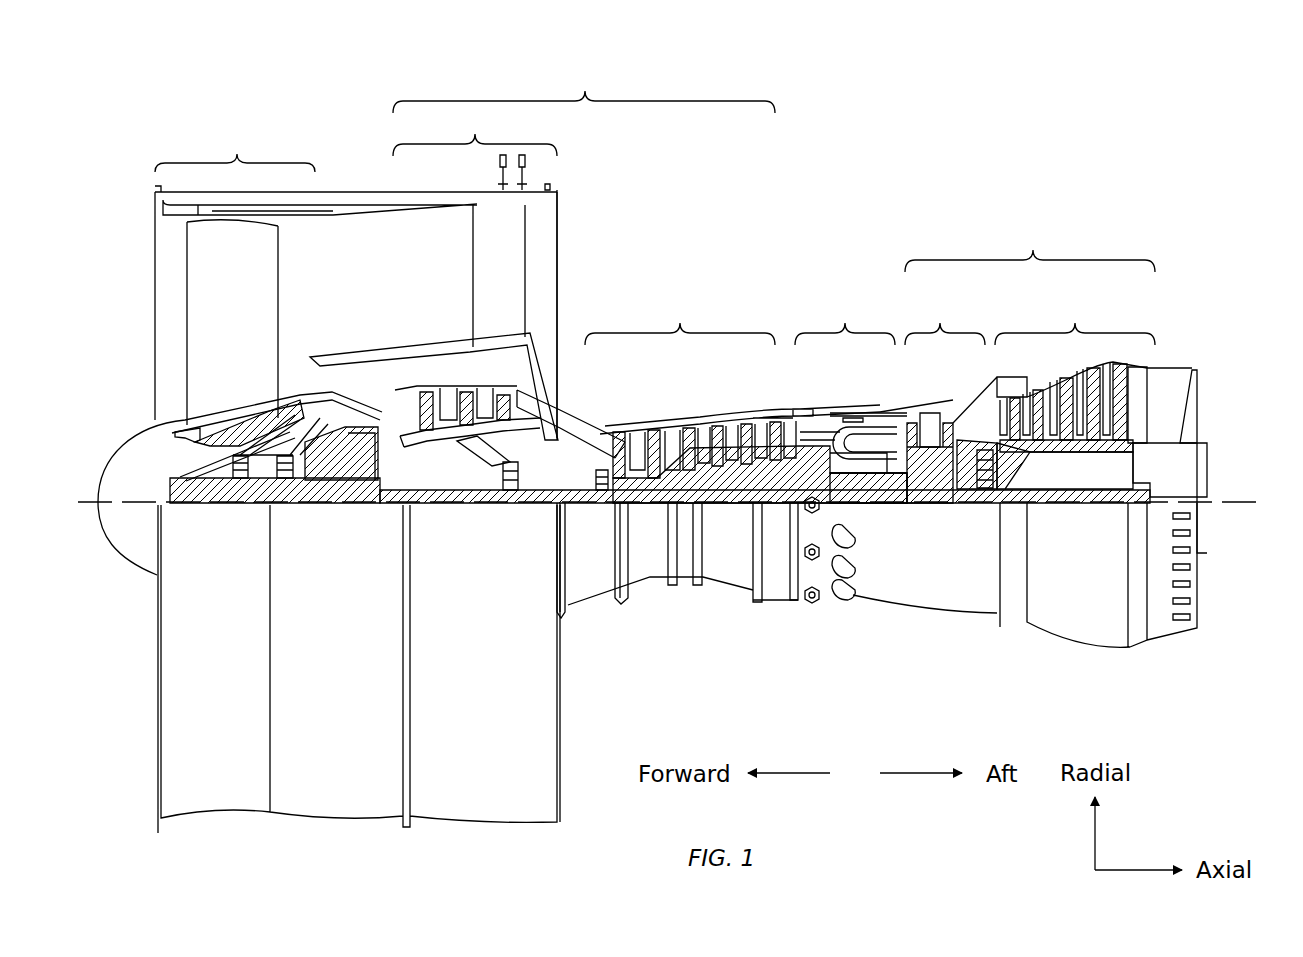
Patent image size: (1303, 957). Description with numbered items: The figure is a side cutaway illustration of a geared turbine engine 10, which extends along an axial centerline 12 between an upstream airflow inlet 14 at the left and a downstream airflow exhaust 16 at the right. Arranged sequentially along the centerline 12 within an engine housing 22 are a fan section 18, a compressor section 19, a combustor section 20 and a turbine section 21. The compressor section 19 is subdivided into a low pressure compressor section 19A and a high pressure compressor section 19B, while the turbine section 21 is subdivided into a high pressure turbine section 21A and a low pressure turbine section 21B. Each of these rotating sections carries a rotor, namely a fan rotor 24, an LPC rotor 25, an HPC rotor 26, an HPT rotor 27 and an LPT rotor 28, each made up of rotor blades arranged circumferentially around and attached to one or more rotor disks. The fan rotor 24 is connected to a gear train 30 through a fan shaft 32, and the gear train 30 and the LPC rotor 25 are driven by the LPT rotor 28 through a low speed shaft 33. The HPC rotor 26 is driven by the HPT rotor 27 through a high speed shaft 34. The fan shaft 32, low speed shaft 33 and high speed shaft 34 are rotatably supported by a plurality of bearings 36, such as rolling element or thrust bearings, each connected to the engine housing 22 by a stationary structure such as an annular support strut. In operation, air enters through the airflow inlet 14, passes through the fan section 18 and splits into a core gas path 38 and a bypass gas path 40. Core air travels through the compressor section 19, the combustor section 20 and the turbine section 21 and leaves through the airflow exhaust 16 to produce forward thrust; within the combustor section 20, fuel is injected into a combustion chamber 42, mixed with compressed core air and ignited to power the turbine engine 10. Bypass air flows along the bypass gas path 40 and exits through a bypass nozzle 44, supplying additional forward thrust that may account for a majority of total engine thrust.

The geared turbine engine 10 is at (124, 178).
The axial centerline 12 is at (1257, 505).
The upstream airflow inlet 14 is at (155, 266).
The downstream airflow exhaust 16 is at (1200, 395).
The fan section 18 is at (235, 145).
The compressor section 19 is at (584, 86).
The low pressure compressor (LPC) section 19A is at (475, 131).
The high pressure compressor (HPC) section 19B is at (680, 318).
The combustor section 20 is at (845, 319).
The turbine section 21 is at (1030, 246).
The high pressure turbine (HPT) section 21A is at (945, 319).
The low pressure turbine (LPT) section 21B is at (1075, 319).
The engine housing 22 is at (569, 615).
The fan rotor 24 is at (168, 430).
The LPC rotor 25 is at (463, 455).
The HPC rotor 26 is at (722, 462).
The HPT rotor 27 is at (932, 489).
The LPT rotor 28 is at (1068, 448).
The gear train 30 is at (357, 505).
The fan shaft 32 is at (222, 505).
The low speed shaft 33 is at (778, 505).
The high speed shaft 34 is at (858, 503).
The bearings 36 is at (253, 480).
The core gas path 38 is at (585, 428).
The bypass gas path 40 is at (407, 284).
The combustion chamber 42 is at (856, 440).
The bypass nozzle 44 is at (557, 245).